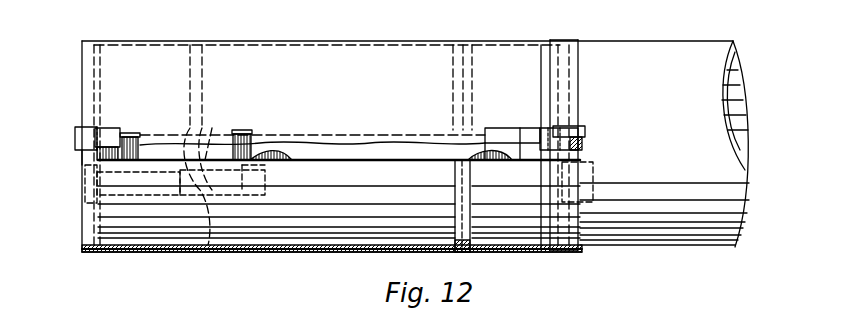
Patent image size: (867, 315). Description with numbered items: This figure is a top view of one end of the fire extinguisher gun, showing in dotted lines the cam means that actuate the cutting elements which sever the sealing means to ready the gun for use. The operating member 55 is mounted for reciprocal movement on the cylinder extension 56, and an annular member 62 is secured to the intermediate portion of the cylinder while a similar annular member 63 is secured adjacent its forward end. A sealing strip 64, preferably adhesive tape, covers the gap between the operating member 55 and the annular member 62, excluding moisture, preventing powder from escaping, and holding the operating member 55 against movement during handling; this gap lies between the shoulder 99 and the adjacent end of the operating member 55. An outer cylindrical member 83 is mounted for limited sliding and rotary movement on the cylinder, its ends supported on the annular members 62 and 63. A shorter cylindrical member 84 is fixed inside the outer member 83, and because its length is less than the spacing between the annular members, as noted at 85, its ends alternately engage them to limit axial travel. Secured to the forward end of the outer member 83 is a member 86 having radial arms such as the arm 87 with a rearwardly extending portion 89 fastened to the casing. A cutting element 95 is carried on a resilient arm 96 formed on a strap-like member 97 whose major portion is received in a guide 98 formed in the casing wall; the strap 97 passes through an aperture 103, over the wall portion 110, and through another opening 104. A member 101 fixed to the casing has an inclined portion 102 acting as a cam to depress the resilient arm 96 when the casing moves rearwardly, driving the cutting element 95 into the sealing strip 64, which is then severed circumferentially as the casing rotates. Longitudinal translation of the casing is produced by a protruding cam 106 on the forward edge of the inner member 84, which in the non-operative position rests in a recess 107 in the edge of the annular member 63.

The operating member 55 is at (645, 40).
The cylinder extension 56 is at (745, 72).
The annular member 62 is at (530, 230).
The annular member 63 is at (150, 228).
The sealing strip 64 is at (566, 40).
The outer cylindrical member 83 is at (313, 40).
The inner cylindrical member 84 is at (341, 228).
The spacing 85 is at (468, 250).
The member 86 is at (78, 126).
The radial arm 87 is at (75, 137).
The rearwardly extending portion 89 is at (106, 128).
The cutting element 95 is at (582, 145).
The resilient arm 96 is at (528, 150).
The strap-like member 97 is at (168, 155).
The guide 98 is at (341, 143).
The shoulder 99 is at (560, 80).
The member 101 is at (585, 130).
The inclined portion 102 is at (537, 135).
The aperture 103 is at (246, 130).
The opening 104 is at (130, 133).
The protruding cam 106 is at (217, 136).
The recess 107 is at (183, 128).
The wall portion 110 is at (200, 134).